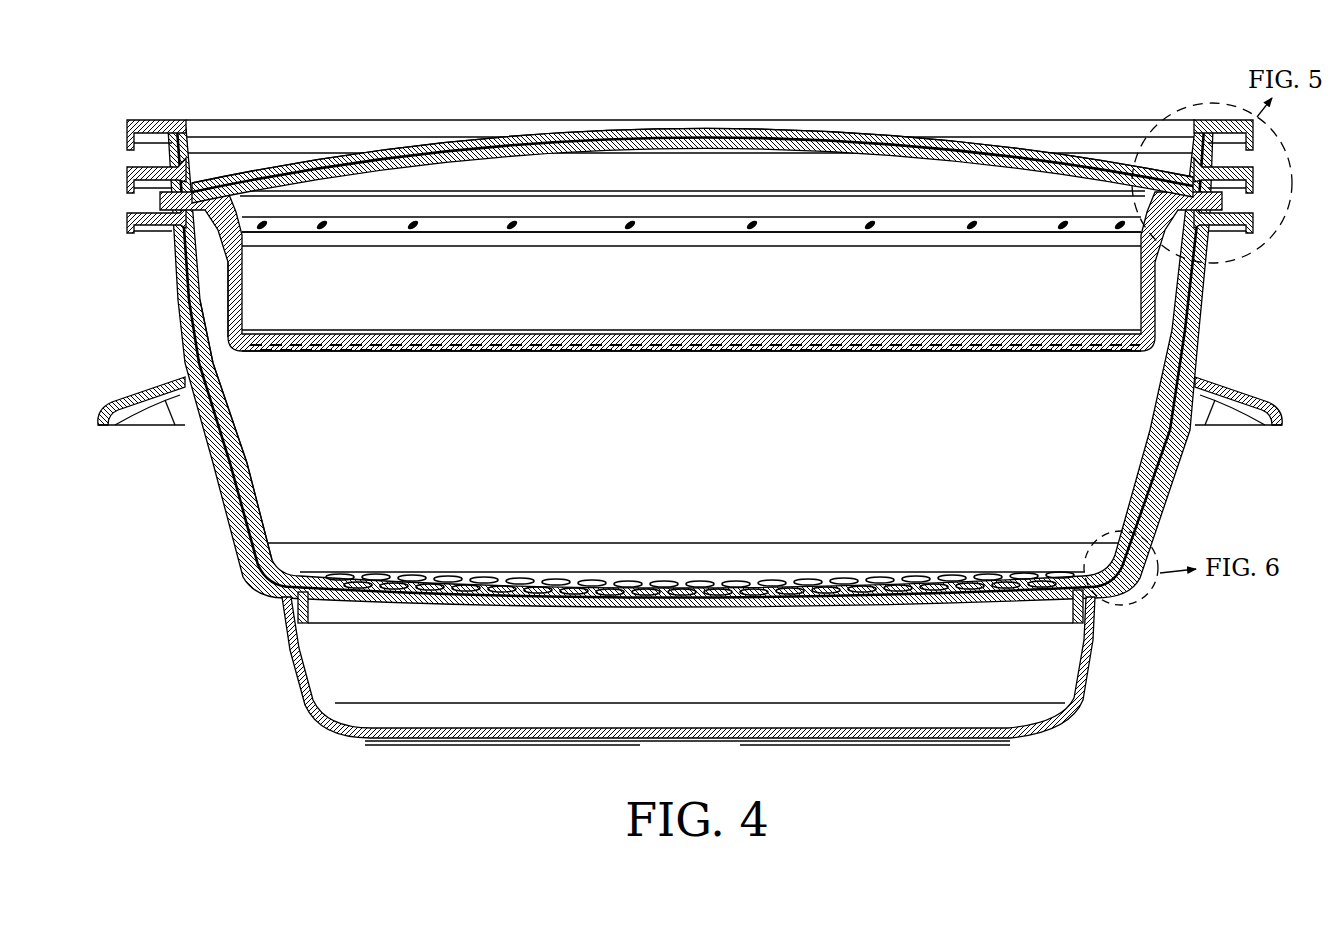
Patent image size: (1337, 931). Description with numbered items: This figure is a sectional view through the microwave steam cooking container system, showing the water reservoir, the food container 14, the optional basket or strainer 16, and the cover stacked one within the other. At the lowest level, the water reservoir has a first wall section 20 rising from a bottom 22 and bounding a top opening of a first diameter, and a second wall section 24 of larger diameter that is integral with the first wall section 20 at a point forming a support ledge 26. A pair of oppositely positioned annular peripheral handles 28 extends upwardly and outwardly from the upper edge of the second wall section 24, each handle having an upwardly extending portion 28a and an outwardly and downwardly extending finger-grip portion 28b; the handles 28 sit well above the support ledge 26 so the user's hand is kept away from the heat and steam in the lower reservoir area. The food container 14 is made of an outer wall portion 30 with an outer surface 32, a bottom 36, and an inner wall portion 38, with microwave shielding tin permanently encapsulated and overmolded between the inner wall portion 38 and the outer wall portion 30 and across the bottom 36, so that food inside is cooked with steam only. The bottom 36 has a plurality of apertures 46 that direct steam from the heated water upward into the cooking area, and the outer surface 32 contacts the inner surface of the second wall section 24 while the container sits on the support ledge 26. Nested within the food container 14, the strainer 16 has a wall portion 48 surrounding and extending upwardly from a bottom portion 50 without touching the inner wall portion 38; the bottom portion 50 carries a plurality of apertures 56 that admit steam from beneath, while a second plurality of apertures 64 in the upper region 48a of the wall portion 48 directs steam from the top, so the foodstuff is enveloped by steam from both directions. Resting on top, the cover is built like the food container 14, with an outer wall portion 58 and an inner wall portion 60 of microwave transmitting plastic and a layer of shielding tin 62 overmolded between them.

The food container 14 is at (679, 363).
The basket or strainer 16 is at (691, 291).
The first wall section 20 is at (678, 699).
The bottom 22 is at (545, 742).
The second wall section 24 is at (222, 533).
The support ledge 26 is at (248, 590).
The annular peripheral handles 28 is at (698, 427).
The upwardly extending portion 28a is at (1197, 430).
The finger-grip portion 28b is at (1262, 383).
The outer wall portion 30 is at (178, 349).
The outer surface 32 is at (1205, 298).
The bottom 36 is at (692, 535).
The inner wall portion 38 is at (214, 404).
The apertures 46 is at (553, 578).
The wall portion 48 is at (243, 286).
The upper region 48a is at (427, 226).
The bottom portion 50 is at (691, 308).
The apertures 56 is at (567, 348).
The outer wall portion 58 is at (692, 132).
The inner wall portion 60 is at (895, 160).
The tin 62 is at (680, 142).
The second plurality of apertures 64 is at (513, 222).